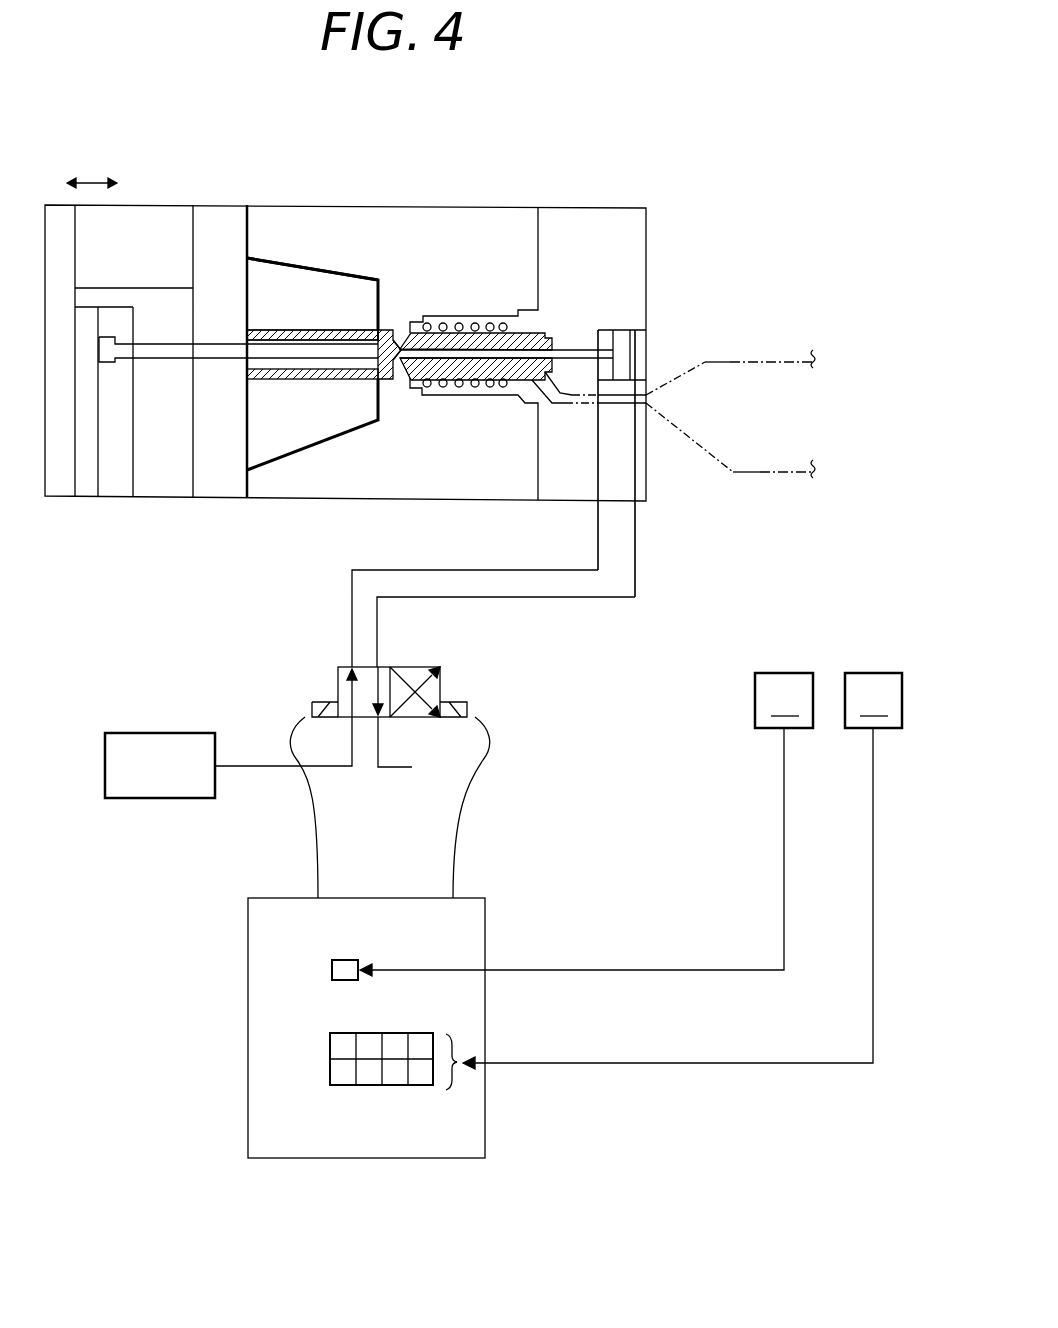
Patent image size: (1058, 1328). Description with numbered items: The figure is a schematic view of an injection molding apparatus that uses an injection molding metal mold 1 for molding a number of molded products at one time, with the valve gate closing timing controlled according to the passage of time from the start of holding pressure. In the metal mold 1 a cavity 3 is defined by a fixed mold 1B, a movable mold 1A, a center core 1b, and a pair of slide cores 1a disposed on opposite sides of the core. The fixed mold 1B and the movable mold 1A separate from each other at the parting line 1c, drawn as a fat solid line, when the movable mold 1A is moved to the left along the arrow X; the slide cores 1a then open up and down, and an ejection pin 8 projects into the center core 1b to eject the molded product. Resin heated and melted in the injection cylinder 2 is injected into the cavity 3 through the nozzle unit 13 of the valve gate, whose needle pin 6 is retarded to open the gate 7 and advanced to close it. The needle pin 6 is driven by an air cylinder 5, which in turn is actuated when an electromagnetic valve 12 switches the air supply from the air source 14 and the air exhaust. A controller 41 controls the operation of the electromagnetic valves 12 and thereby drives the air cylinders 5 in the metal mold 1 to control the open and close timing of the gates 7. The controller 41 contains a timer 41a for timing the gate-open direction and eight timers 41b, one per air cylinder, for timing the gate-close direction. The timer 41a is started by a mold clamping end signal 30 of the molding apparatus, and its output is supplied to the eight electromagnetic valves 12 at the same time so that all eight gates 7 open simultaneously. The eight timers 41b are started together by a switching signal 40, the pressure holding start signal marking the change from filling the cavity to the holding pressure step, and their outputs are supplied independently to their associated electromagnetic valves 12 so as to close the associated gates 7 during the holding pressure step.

The metal mold 1 is at (333, 172).
The movable mold 1A is at (157, 199).
The fixed mold 1B is at (282, 199).
The slide cores 1a is at (253, 290).
The center core 1b is at (345, 333).
The parting line 1c is at (322, 256).
The injection cylinder 2 is at (729, 362).
The cavity 3 is at (307, 388).
The air cylinder 5 is at (620, 332).
The needle pin 6 is at (571, 342).
The gate 7 is at (404, 322).
The ejection pin 8 is at (164, 360).
The electromagnetic valve 12 is at (467, 706).
The nozzle unit 13 is at (451, 330).
The air source 14 is at (195, 798).
The mold clamping end signal 30 is at (586, 824).
The switching signal 40 is at (682, 871).
The controller 41 is at (485, 910).
The timer 41a is at (332, 970).
The timers 41b is at (372, 1085).
The arrow X is at (92, 169).